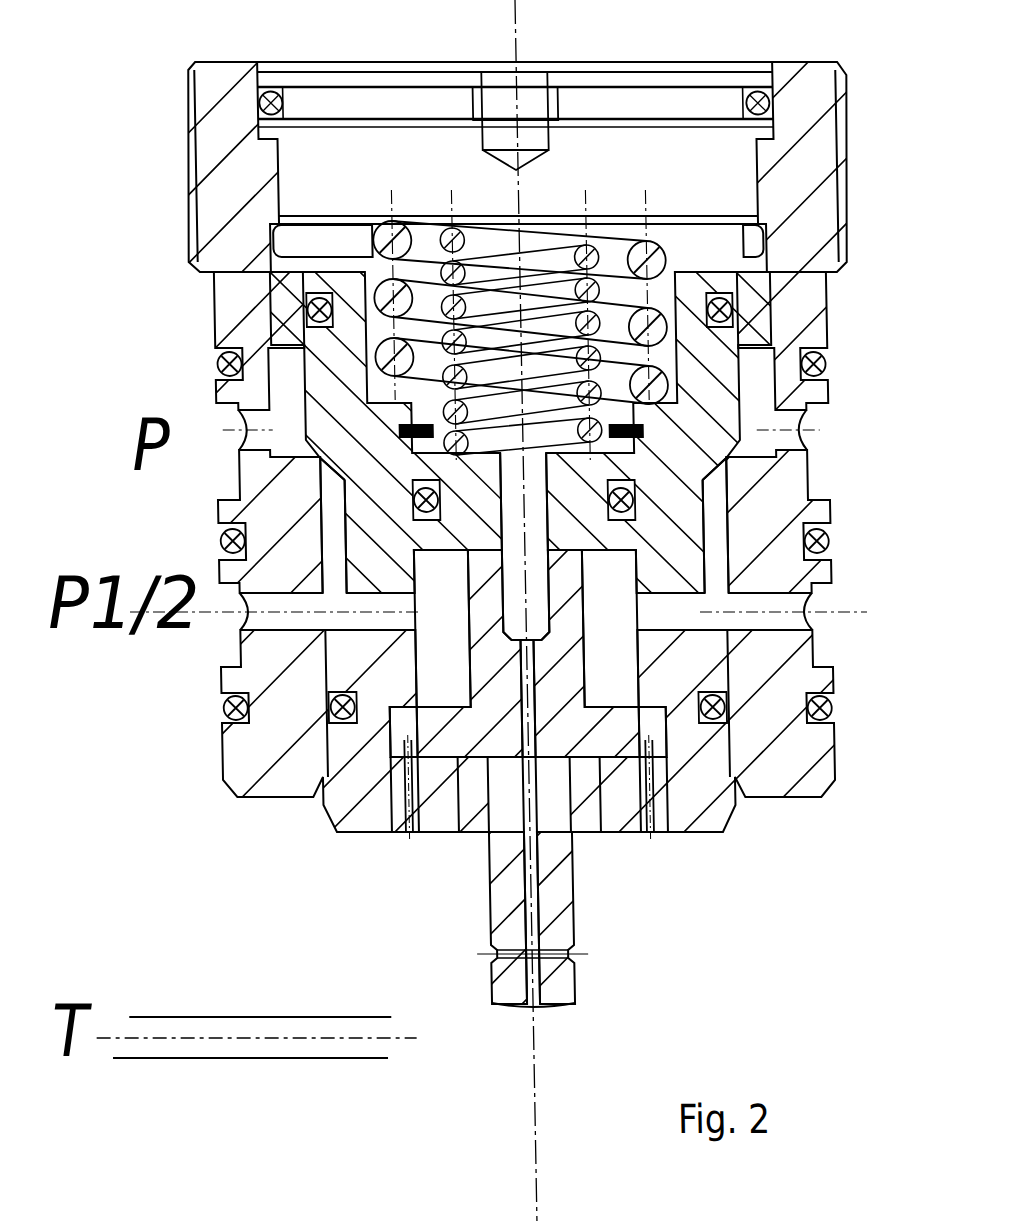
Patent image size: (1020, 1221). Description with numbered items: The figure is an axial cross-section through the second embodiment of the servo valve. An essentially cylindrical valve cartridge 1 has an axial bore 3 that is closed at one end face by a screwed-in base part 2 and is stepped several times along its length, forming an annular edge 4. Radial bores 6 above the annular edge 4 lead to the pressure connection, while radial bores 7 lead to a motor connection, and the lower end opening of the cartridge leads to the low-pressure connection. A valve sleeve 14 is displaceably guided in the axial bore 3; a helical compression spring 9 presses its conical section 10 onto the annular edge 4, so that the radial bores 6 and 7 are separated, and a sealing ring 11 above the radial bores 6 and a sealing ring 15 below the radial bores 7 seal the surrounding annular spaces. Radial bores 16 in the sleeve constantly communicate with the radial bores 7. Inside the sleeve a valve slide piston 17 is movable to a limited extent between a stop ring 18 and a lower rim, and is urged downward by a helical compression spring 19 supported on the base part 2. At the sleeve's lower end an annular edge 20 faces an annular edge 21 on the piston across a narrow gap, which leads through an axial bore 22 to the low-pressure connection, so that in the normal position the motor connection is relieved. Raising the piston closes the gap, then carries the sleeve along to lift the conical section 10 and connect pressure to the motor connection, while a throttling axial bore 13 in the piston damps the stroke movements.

The valve cartridge 1 is at (236, 763).
The base part 2 is at (348, 104).
The axial bore 3 is at (323, 252).
The annular edge 4 is at (263, 468).
The radial bores 6 is at (782, 424).
The radial bores 7 is at (777, 604).
The helical compression spring 9 is at (657, 246).
The conical section 10 is at (292, 462).
The sealing ring 11 is at (298, 309).
The axial bore 13 is at (524, 589).
The valve sleeve 14 is at (689, 806).
The sealing ring 15 is at (316, 708).
The radial bores 16 is at (349, 622).
The valve slide piston 17 is at (541, 907).
The stop ring 18 is at (762, 466).
The helical compression spring 19 is at (586, 246).
The annular edge 20 is at (640, 698).
The annular edge 21 is at (692, 748).
The axial bore 22 is at (396, 838).